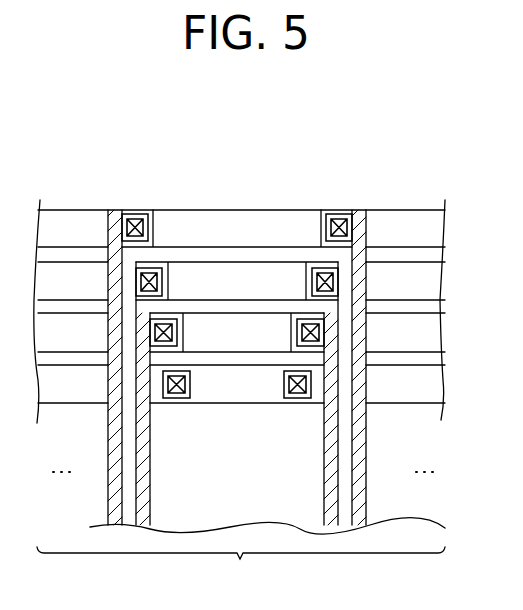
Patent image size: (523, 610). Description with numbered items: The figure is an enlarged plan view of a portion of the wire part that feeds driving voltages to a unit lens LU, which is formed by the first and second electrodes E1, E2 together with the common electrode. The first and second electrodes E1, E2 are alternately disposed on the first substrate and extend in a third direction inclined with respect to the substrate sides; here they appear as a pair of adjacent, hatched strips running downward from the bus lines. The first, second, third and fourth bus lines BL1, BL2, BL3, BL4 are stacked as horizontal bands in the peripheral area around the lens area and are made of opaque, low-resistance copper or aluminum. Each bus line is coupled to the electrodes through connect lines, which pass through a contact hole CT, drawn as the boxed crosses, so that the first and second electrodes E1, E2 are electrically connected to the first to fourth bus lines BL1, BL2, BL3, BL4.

The first bus line BL1 is at (173, 220).
The second bus line BL2 is at (212, 273).
The third bus line BL3 is at (240, 323).
The fourth bus line BL4 is at (257, 373).
The contact hole CT is at (312, 383).
The first electrode E1 is at (310, 437).
The second electrode E2 is at (333, 505).
The unit lens LU is at (241, 570).